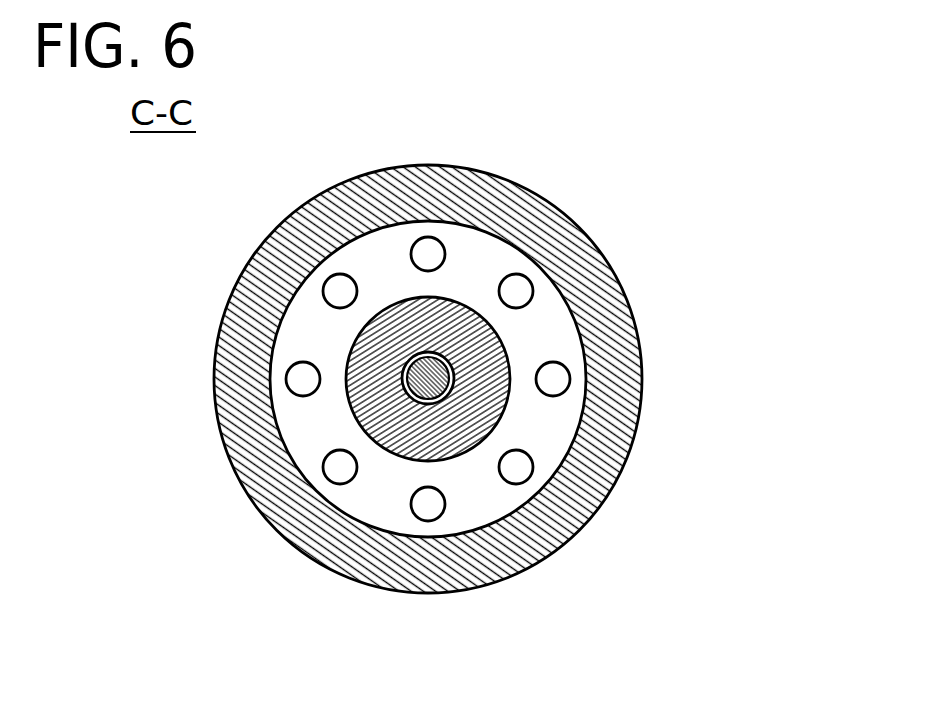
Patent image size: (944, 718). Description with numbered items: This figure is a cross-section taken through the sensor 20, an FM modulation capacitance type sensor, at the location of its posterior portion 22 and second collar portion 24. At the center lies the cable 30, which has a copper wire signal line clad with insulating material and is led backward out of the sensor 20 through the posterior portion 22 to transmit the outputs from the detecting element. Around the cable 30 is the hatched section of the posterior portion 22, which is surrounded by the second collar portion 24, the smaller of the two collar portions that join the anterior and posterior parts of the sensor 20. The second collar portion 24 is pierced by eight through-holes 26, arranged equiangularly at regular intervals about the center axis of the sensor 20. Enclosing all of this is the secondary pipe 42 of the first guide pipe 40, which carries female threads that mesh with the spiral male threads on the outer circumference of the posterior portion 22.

The sensor 20 is at (522, 379).
The posterior portion 22 is at (498, 342).
The second collar portion 24 is at (560, 347).
The through-holes 26 is at (560, 393).
The cable 30 is at (420, 362).
The first guide pipe 40 is at (432, 352).
The secondary pipe 42 is at (520, 200).